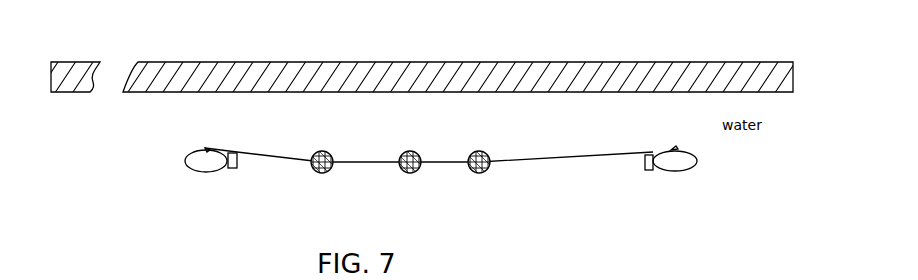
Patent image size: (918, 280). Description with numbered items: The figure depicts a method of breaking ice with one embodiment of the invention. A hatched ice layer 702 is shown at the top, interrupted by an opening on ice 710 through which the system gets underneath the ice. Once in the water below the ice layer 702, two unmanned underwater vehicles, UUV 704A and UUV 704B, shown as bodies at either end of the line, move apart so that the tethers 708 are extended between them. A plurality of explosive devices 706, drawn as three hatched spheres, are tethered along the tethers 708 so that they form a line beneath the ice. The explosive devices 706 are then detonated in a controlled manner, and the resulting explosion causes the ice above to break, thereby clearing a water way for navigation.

The hull / vessel bottom 702 is at (562, 62).
The opening on ice 710 is at (119, 58).
The tethers 708 is at (562, 172).
The explosive devices 706 is at (472, 183).
The UUV 704B is at (232, 196).
The UUV 704A is at (688, 172).